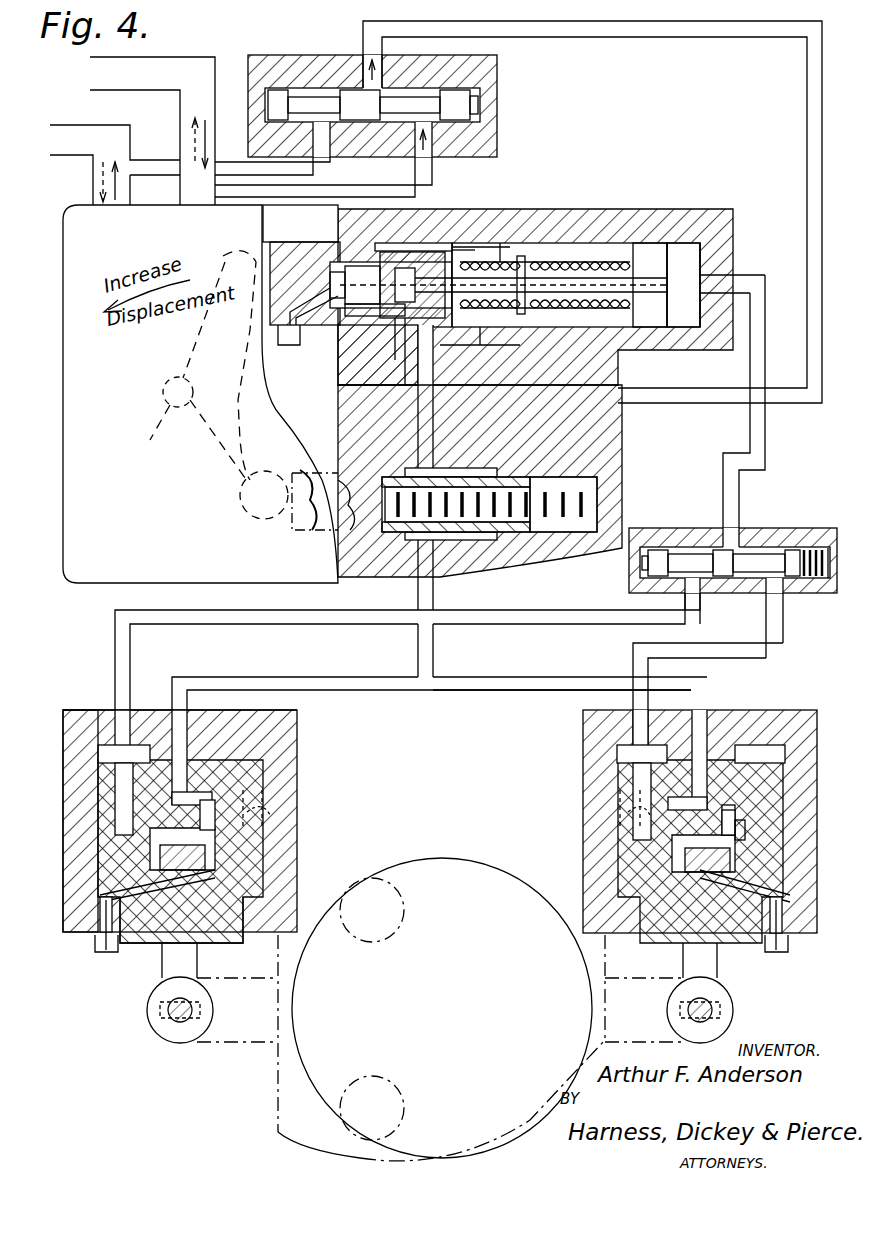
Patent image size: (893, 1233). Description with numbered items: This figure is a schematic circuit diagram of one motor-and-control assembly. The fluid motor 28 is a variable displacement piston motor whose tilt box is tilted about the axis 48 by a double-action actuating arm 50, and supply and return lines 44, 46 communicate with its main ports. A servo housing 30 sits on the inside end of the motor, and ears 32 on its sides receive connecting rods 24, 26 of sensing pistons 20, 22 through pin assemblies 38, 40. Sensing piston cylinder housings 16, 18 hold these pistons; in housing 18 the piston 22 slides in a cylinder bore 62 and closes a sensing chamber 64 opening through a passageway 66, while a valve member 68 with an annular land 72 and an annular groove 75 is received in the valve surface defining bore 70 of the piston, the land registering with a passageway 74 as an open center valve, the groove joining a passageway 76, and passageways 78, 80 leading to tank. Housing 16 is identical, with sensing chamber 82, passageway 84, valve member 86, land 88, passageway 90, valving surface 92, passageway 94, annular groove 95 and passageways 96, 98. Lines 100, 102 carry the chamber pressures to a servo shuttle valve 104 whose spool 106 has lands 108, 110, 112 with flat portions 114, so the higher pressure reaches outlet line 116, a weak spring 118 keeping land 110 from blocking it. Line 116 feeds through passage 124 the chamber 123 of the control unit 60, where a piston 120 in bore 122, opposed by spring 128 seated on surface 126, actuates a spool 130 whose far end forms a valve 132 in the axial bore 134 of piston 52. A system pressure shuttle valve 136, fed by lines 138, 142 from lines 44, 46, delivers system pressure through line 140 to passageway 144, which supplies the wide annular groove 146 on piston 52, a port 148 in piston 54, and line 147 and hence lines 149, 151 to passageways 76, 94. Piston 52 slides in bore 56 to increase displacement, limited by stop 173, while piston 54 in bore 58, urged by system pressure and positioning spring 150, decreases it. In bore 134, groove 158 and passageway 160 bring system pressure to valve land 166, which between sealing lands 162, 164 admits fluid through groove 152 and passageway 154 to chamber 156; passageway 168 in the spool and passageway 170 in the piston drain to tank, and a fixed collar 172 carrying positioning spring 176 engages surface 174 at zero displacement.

The sensing piston cylinder housing 16 is at (689, 819).
The sensing piston cylinder housing 18 is at (203, 817).
The sensing piston 20 is at (775, 795).
The sensing piston 22 is at (255, 820).
The connecting rod 24 is at (718, 975).
The connecting rod 26 is at (160, 973).
The fluid motor 28 is at (92, 576).
The servo housing 30 is at (290, 1118).
The ears 32 is at (225, 1045).
The pin assembly 38 is at (710, 1010).
The pin assembly 40 is at (170, 1010).
The supply and return line 44 is at (90, 70).
The supply and return line 46 is at (88, 130).
The tilt box axis 48 is at (150, 412).
The double-action actuating arm 50 is at (195, 452).
The piston 52 is at (322, 248).
The piston 54 is at (345, 462).
The bore 56 is at (561, 274).
The bore 58 is at (565, 535).
The control unit 60 is at (658, 218).
The cylinder bore 62 is at (98, 795).
The sensing chamber 64 is at (270, 740).
The passageway 66 is at (112, 712).
The valve member 68 is at (187, 835).
The valve surface defining bore 70 is at (152, 850).
The annular land 72 is at (270, 840).
The passageway 74 is at (125, 822).
The annular groove 75 is at (155, 745).
The passageway 76 is at (190, 720).
The passageway 78 is at (100, 880).
The passageway 80 is at (100, 918).
The sensing chamber 82 is at (765, 750).
The passageway 84 is at (645, 720).
The valve member 86 is at (703, 838).
The land 88 is at (735, 825).
The passageway 90 is at (640, 778).
The valving surface 92 is at (735, 852).
The passageway 94 is at (708, 720).
The annular groove 95 is at (650, 818).
The passageway 96 is at (790, 880).
The passageway 98 is at (785, 935).
The line 100 is at (555, 628).
The line 102 is at (758, 660).
The servo shuttle valve 104 is at (734, 554).
The spool 106 is at (750, 556).
The land 108 is at (655, 550).
The land 110 is at (716, 548).
The land 112 is at (798, 550).
The flat portion 114 is at (645, 594).
The outlet line 116 is at (750, 432).
The weak spring 118 is at (818, 580).
The piston 120 is at (660, 330).
The bore 122 is at (690, 250).
The chamber 123 is at (740, 222).
The passage 124 is at (720, 290).
The surface 126 is at (585, 243).
The spring 128 is at (648, 243).
The spool 130 is at (600, 300).
The valve 132 is at (445, 230).
The axial bore 134 is at (305, 283).
The system pressure shuttle valve 136 is at (503, 84).
The line 138 is at (355, 185).
The system-pressure line 140 is at (672, 36).
The line 142 is at (150, 170).
The passageway 144 is at (440, 428).
The wide annular groove 146 is at (378, 355).
The line 147 is at (434, 644).
The port 148 is at (455, 480).
The line 149 is at (298, 676).
The positioning spring 150 is at (548, 478).
The line 151 is at (520, 688).
The first annular groove 152 is at (375, 323).
The passageway 154 is at (476, 228).
The chamber 156 is at (453, 341).
The second annular groove 158 is at (376, 347).
The passageway 160 is at (386, 359).
The sealing land 162 is at (410, 233).
The sealing land 164 is at (322, 308).
The valve land 166 is at (386, 280).
The passageway 168 is at (495, 320).
The passageway 170 is at (288, 347).
The fixed collar 172 is at (540, 235).
The stop 173 is at (512, 246).
The surface 174 is at (540, 330).
The positioning spring 176 is at (480, 363).